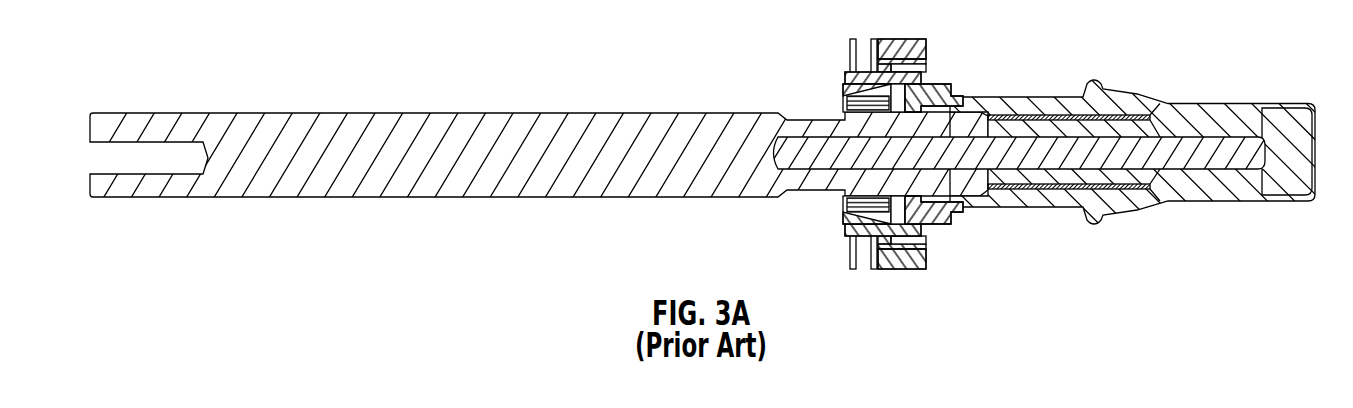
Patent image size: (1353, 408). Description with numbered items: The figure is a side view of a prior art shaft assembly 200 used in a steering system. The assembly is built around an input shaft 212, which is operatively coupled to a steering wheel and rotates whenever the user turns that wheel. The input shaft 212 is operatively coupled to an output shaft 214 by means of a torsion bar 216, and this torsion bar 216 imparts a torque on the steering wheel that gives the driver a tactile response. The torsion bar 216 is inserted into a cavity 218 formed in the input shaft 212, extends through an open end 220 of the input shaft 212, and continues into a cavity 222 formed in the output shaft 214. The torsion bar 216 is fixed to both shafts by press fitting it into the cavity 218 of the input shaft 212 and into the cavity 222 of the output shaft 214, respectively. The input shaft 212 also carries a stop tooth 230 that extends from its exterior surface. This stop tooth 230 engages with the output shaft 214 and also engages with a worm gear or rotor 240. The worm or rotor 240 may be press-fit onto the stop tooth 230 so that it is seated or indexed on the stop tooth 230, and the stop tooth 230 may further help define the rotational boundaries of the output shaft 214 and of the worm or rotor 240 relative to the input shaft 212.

The shaft assembly 200 is at (713, 158).
The input shaft 212 is at (521, 104).
The output shaft 214 is at (1072, 152).
The torsion bar 216 is at (1022, 189).
The cavity 218 is at (1100, 172).
The open end 220 is at (1157, 176).
The cavity 222 is at (1213, 135).
The stop tooth 230 is at (855, 186).
The worm gear or rotor 240 is at (926, 268).